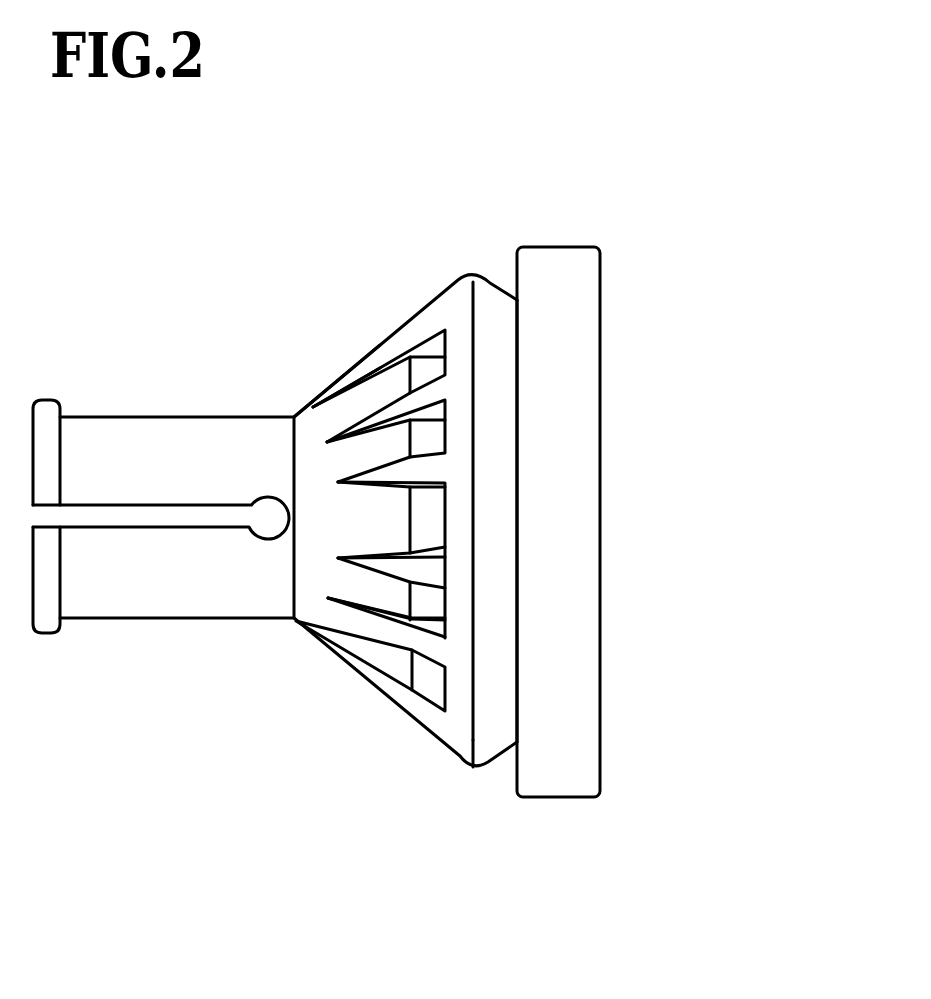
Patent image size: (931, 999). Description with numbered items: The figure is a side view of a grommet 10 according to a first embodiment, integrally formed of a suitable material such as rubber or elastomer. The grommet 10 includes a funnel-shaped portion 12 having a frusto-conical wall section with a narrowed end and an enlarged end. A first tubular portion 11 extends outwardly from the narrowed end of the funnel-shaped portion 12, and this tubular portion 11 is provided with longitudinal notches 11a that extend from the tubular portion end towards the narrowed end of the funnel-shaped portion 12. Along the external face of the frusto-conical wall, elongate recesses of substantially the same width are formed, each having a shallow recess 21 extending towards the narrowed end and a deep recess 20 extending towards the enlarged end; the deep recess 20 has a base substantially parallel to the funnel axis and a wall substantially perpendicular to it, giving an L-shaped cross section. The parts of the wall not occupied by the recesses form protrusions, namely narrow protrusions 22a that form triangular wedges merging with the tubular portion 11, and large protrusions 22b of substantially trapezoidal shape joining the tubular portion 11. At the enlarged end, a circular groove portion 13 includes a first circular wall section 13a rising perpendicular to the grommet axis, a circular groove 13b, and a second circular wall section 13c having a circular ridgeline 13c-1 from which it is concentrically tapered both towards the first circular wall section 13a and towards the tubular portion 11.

The grommet 10 is at (220, 398).
The first tubular portion 11 is at (98, 610).
The longitudinal notches 11a is at (135, 515).
The funnel-shaped portion 12 is at (437, 743).
The circular groove portion 13 is at (496, 760).
The first circular wall section 13a is at (558, 278).
The circular groove 13b is at (513, 288).
The second circular wall section 13c is at (513, 298).
The circular ridgeline 13c-1 is at (473, 767).
The deep recess 20 is at (417, 340).
The shallow recess 21 is at (357, 393).
The narrow protrusions 22a is at (388, 627).
The large protrusions 22b is at (385, 687).